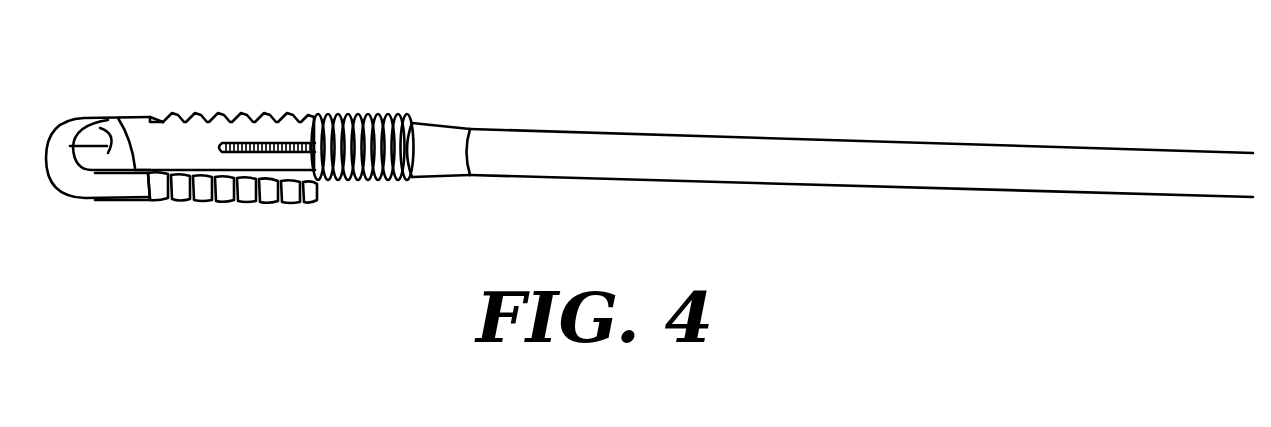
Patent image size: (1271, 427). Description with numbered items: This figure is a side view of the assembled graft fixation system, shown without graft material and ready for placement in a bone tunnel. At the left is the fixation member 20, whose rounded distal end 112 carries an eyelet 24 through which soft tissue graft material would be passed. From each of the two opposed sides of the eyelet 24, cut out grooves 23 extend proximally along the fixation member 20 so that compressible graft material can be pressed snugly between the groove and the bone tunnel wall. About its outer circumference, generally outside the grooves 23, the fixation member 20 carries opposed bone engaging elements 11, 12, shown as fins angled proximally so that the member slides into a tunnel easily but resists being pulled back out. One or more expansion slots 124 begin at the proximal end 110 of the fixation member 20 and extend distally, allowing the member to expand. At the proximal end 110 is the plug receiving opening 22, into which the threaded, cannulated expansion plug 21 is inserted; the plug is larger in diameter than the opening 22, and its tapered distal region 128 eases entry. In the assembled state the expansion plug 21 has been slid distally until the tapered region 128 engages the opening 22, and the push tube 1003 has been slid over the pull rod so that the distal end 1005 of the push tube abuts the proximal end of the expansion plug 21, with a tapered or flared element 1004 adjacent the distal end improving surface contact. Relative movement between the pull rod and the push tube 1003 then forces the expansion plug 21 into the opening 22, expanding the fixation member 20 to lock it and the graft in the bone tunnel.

The fixation member 20 is at (193, 75).
The expansion plug 21 is at (388, 78).
The eyelet 24 is at (98, 143).
The bone engaging element 11 is at (263, 118).
The expansion slot 124 is at (272, 143).
The tapered distal region 128 is at (318, 125).
The groove 23 is at (205, 162).
The proximal plug receiving opening 22 is at (337, 177).
The distal end 112 is at (45, 164).
The bone engaging element 12 is at (222, 201).
The proximal end 110 is at (318, 192).
The distal end of push tube 1005 is at (418, 132).
The tapered or flared element 1004 is at (454, 155).
The push tube 1003 is at (920, 172).